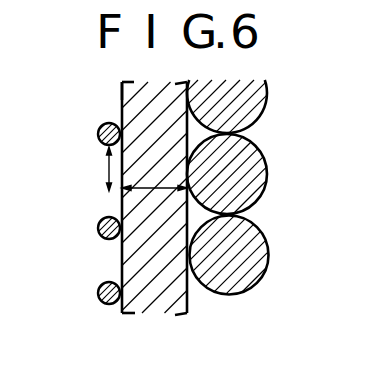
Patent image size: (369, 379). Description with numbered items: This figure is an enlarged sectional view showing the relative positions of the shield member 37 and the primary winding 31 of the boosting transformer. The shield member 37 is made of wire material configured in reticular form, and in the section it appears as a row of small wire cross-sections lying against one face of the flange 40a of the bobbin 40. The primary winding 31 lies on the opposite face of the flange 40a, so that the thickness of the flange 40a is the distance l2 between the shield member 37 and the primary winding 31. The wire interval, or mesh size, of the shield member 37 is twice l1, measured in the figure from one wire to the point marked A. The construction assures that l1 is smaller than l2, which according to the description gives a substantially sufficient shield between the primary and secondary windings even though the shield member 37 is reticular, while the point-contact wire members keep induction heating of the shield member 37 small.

The bobbin 40 is at (136, 312).
The flange of the bobbin 40a is at (136, 97).
The shield member 37 is at (99, 136).
The primary winding 31 is at (261, 162).
The reference point A is at (108, 191).